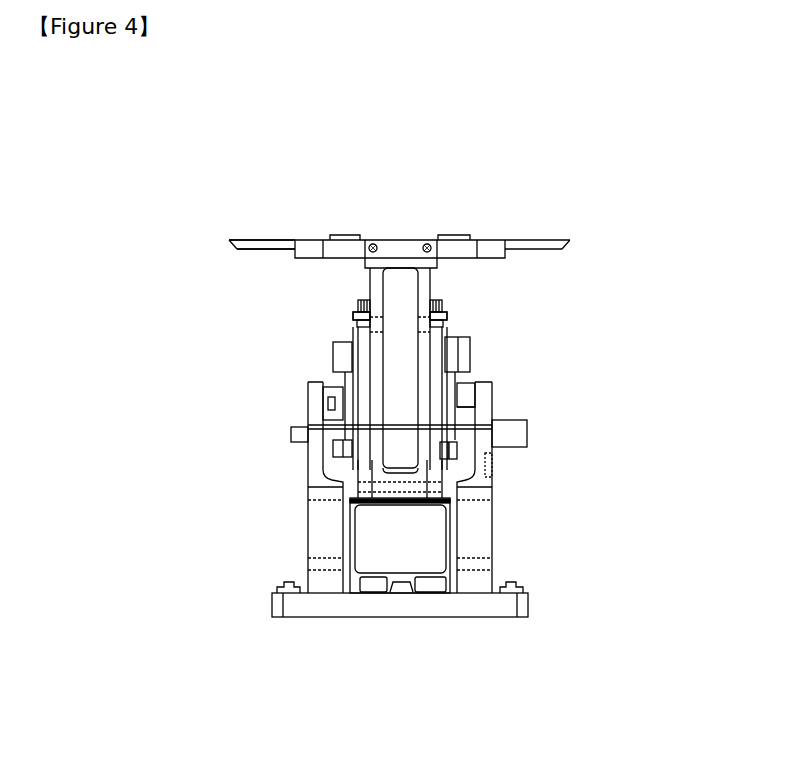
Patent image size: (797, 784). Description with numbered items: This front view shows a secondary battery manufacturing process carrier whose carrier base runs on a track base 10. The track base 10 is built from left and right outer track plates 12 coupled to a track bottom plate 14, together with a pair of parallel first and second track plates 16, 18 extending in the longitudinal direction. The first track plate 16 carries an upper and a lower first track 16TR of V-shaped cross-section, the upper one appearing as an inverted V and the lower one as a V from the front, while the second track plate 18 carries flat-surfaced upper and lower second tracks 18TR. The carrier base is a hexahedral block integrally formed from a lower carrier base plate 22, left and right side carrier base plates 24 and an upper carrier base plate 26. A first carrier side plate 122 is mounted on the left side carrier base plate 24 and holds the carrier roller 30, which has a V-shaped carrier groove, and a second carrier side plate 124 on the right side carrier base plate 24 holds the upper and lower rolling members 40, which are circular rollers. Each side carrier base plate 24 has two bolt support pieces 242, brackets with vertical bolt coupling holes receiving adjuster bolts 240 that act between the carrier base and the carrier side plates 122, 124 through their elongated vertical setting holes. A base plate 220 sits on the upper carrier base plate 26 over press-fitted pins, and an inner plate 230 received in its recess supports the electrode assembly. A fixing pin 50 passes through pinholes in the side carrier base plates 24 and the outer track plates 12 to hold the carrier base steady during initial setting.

The track base 10 is at (507, 502).
The outer track plate 12 is at (308, 483).
The track bottom plate 14 is at (445, 618).
The first track plate 16 is at (478, 390).
The first track 16TR is at (462, 373).
The second track plate 18 is at (307, 397).
The second track 18TR is at (343, 372).
The lower carrier base plate 22 is at (398, 475).
The side carrier base plate 24 is at (377, 392).
The upper carrier base plate 26 is at (398, 265).
The carrier roller 30 is at (485, 340).
The rolling member 40 is at (318, 353).
The fixing pin 50 is at (280, 462).
The first carrier side plate 122 is at (447, 335).
The second carrier side plate 124 is at (353, 335).
The base plate 220 is at (450, 232).
The inner plate 230 is at (228, 228).
The adjuster bolt 240 is at (344, 294).
The bolt support piece 242 is at (353, 312).